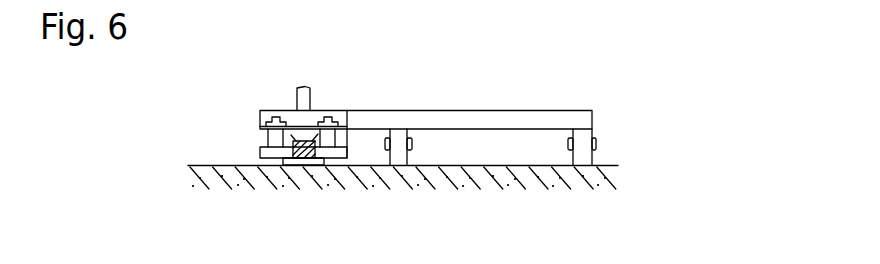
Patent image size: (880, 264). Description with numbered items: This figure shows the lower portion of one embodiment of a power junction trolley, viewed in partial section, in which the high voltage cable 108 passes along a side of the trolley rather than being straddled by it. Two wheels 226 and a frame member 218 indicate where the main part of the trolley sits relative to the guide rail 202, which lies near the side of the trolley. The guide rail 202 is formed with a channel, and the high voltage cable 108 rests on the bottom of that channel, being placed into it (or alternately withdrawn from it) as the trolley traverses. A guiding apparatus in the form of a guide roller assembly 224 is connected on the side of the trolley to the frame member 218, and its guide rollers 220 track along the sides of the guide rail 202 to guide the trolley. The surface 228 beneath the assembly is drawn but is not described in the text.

The high voltage cable 108 is at (297, 88).
The guide rail 202 is at (313, 141).
The frame member 218 is at (507, 110).
The guide rollers 220 is at (259, 157).
The guide roller assembly 224 is at (258, 111).
The wheels 226 is at (592, 155).
The ground surface 228 is at (618, 165).